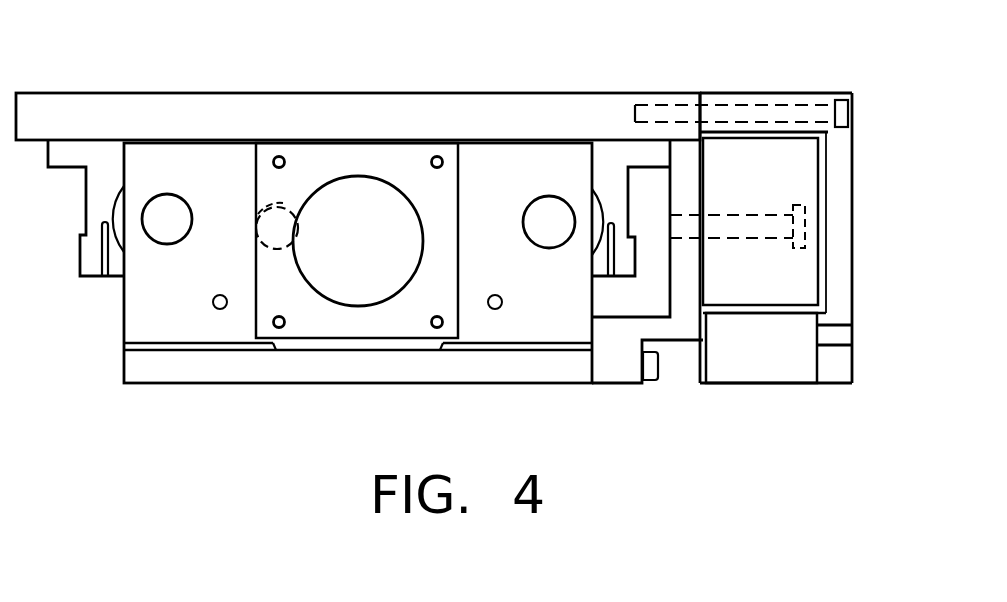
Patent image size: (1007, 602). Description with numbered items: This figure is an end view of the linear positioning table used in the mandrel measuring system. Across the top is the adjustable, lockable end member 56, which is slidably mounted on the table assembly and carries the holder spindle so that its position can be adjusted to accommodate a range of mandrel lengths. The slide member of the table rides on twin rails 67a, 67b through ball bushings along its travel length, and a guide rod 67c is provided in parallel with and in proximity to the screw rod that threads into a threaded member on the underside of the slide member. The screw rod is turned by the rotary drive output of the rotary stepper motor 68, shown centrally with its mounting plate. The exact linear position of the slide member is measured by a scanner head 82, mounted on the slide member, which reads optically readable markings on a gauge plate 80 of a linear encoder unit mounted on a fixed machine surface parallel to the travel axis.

The end member 56 is at (337, 107).
The gauge plate 80 is at (760, 110).
The scanner head 82 is at (810, 173).
The rotary stepper motor 68 is at (376, 247).
The rail 67a is at (165, 235).
The rail 67b is at (532, 222).
The guide rod 67c is at (283, 207).